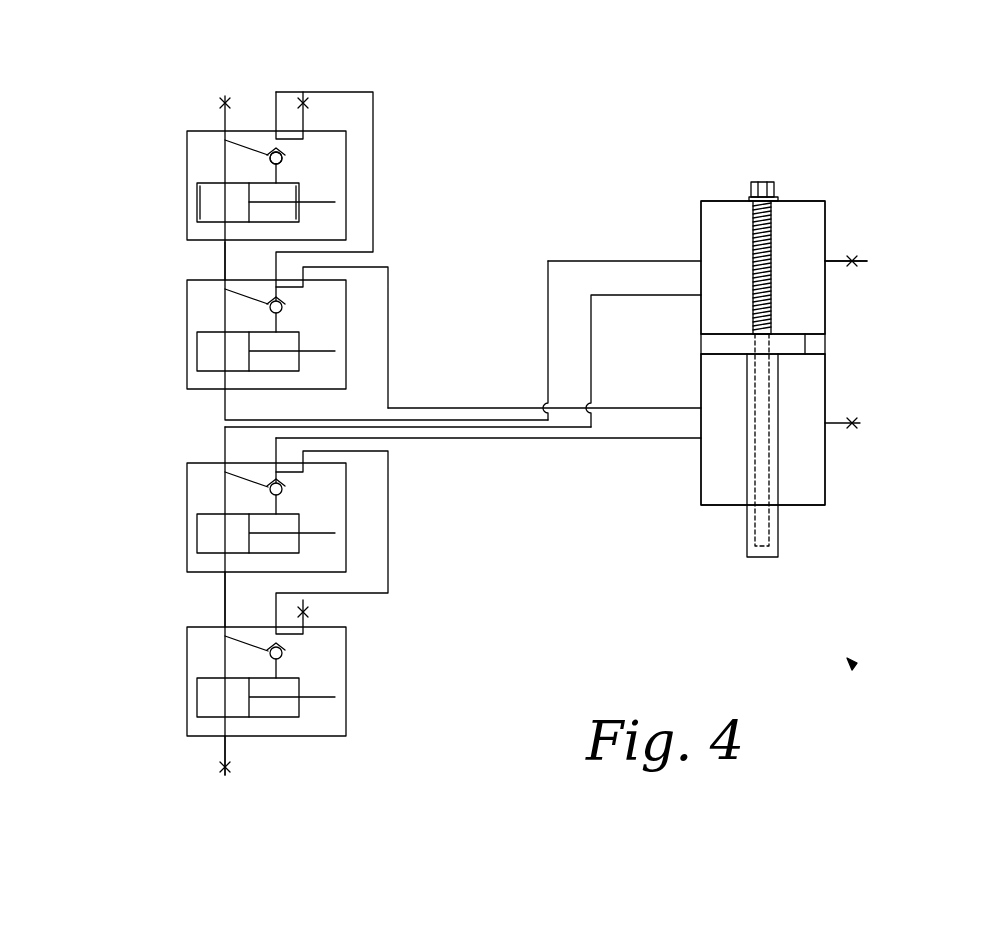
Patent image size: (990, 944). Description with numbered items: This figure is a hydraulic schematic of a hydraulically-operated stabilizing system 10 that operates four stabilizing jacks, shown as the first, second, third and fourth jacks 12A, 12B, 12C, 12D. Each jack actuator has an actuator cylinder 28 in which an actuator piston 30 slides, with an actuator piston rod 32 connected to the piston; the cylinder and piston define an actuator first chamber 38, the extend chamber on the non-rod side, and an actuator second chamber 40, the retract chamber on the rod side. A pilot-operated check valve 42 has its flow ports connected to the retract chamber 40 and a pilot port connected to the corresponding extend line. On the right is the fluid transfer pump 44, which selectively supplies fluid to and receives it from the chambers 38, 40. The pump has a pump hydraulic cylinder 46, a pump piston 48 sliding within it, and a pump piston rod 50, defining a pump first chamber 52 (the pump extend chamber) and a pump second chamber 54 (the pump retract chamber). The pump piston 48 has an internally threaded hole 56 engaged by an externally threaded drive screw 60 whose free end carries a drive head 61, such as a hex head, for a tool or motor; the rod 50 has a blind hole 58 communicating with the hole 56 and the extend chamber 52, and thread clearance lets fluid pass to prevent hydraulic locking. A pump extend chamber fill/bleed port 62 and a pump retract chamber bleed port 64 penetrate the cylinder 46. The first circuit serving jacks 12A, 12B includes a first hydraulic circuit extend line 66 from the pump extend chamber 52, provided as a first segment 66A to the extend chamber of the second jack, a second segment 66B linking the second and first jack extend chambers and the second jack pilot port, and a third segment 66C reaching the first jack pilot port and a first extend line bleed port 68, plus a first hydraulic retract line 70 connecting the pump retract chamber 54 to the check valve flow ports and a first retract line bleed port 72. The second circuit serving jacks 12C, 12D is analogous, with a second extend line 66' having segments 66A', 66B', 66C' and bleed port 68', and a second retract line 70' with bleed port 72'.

The hydraulically-operated stabilizing system 10 is at (852, 666).
The first jack 12A is at (346, 185).
The second jack 12B is at (346, 333).
The third jack 12C is at (346, 513).
The fourth jack 12D is at (346, 672).
The actuator cylinder 28 is at (212, 183).
The actuator piston 30 is at (258, 201).
The actuator piston rod 32 is at (323, 202).
The actuator first chamber 38 is at (213, 197).
The actuator second chamber 40 is at (283, 213).
The pilot-operated check valve 42 is at (283, 154).
The fluid transfer pump 44 is at (828, 352).
The pump hydraulic cylinder 46 is at (826, 288).
The pump piston 48 is at (812, 345).
The pump piston rod 50 is at (755, 548).
The pump first chamber 52 is at (728, 225).
The pump second chamber 54 is at (805, 465).
The hole 56 is at (762, 342).
The blind hole 58 is at (762, 522).
The drive screw 60 is at (771, 232).
The drive head 61 is at (762, 182).
The pump extend chamber fill/bleed port 62 is at (852, 258).
The pump retract chamber bleed port 64 is at (862, 423).
The first hydraulic circuit extend line 66 is at (707, 242).
The second hydraulic circuit extend line 66' is at (643, 361).
The first segment 66A is at (504, 340).
The first segment of second extend line 66A' is at (341, 598).
The second segment 66B is at (159, 276).
The second segment of second extend line 66B' is at (158, 597).
The third segment 66C is at (339, 250).
The third segment of second extend line 66C' is at (158, 752).
The first extend line bleed port 68 is at (248, 78).
The second extend line bleed port 68' is at (287, 768).
The first hydraulic retract line 70 is at (488, 250).
The second hydraulic retract line 70' is at (488, 468).
The first retract line bleed port 72 is at (353, 93).
The second retract line bleed port 72' is at (374, 606).